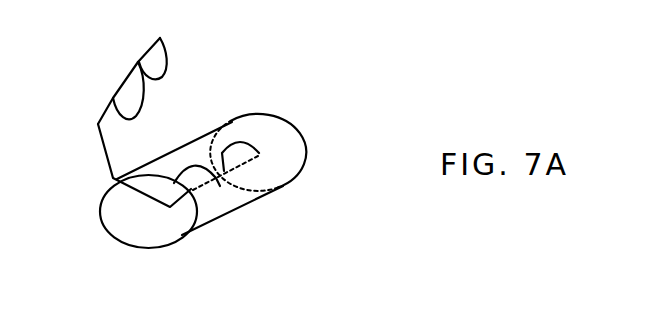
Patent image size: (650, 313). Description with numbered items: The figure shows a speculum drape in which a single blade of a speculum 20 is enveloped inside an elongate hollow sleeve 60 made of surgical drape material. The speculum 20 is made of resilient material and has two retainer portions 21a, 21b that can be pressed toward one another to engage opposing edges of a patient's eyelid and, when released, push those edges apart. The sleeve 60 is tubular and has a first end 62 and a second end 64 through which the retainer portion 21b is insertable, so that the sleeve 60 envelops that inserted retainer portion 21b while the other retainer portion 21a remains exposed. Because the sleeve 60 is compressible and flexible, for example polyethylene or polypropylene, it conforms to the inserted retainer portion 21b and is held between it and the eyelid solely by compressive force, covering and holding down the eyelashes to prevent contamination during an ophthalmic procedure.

The speculum 20 is at (139, 128).
The retainer portion 21a is at (166, 49).
The retainer portion 21b is at (258, 152).
The elongate hollow sleeve 60 is at (235, 177).
The first end 62 is at (153, 225).
The second end 64 is at (293, 157).